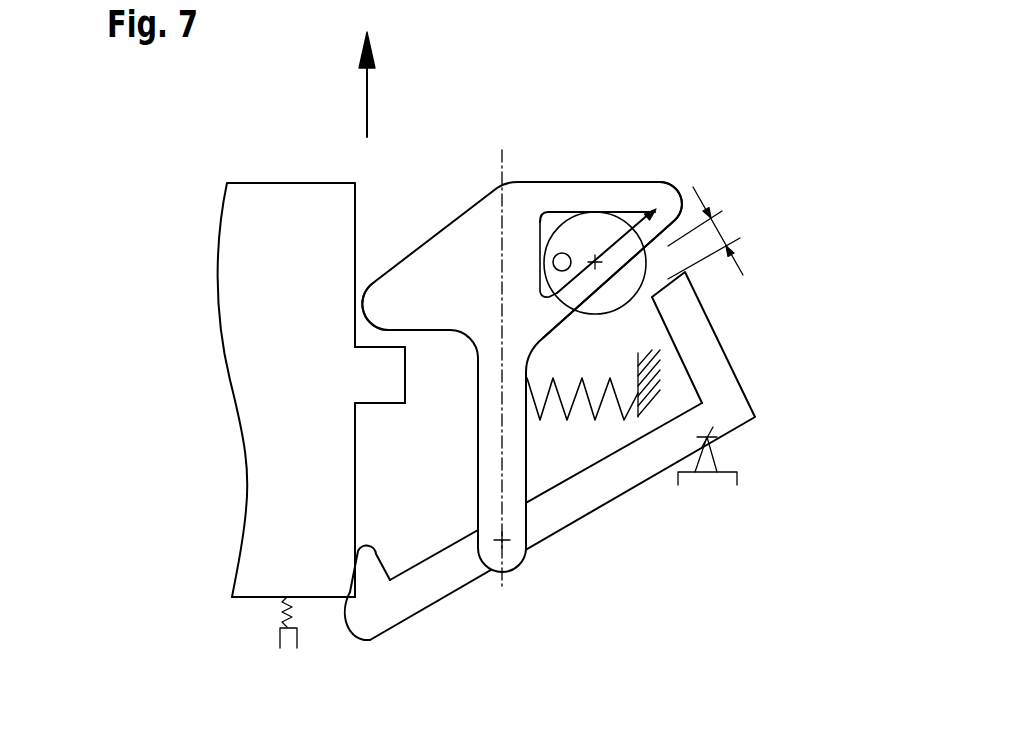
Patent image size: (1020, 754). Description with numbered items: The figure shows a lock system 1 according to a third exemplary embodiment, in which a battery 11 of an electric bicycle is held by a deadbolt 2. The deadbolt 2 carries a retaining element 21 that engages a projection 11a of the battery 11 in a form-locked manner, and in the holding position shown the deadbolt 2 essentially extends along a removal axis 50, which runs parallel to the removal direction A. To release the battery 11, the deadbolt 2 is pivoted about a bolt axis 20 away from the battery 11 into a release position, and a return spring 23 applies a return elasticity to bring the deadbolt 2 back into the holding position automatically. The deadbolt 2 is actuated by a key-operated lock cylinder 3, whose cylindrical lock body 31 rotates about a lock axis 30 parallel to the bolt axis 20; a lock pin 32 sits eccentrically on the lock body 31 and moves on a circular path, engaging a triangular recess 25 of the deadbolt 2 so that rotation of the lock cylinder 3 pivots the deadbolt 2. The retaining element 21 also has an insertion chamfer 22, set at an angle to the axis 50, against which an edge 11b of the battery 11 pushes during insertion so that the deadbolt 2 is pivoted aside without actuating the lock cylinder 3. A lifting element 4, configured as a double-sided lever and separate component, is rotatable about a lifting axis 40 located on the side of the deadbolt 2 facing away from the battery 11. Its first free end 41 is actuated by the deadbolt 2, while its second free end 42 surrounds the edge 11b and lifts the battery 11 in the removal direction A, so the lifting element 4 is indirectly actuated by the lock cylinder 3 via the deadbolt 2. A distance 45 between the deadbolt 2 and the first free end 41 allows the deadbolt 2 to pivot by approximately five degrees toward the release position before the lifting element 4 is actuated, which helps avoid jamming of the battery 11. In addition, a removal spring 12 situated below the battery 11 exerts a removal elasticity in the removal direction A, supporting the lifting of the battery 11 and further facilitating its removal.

The lock system 1 is at (741, 96).
The deadbolt 2 is at (444, 250).
The lock cylinder 3 is at (668, 186).
The lifting element 4 is at (412, 578).
The battery 11 is at (237, 290).
The projection 11a is at (393, 360).
The edge 11b is at (348, 592).
The removal spring 12 is at (282, 613).
The bolt axis 20 is at (510, 540).
The retaining element 21 is at (440, 317).
The insertion chamfer 22 is at (388, 275).
The return spring 23 is at (640, 392).
The triangular recess 25 is at (550, 223).
The lock axis 30 is at (594, 256).
The lock body 31 is at (622, 232).
The lock pin 32 is at (562, 266).
The lifting axis 40 is at (718, 428).
The first free end 41 is at (668, 268).
The second free end 42 is at (368, 632).
The distance 45 is at (722, 233).
The removal axis 50 is at (500, 147).
The removal direction A is at (367, 98).